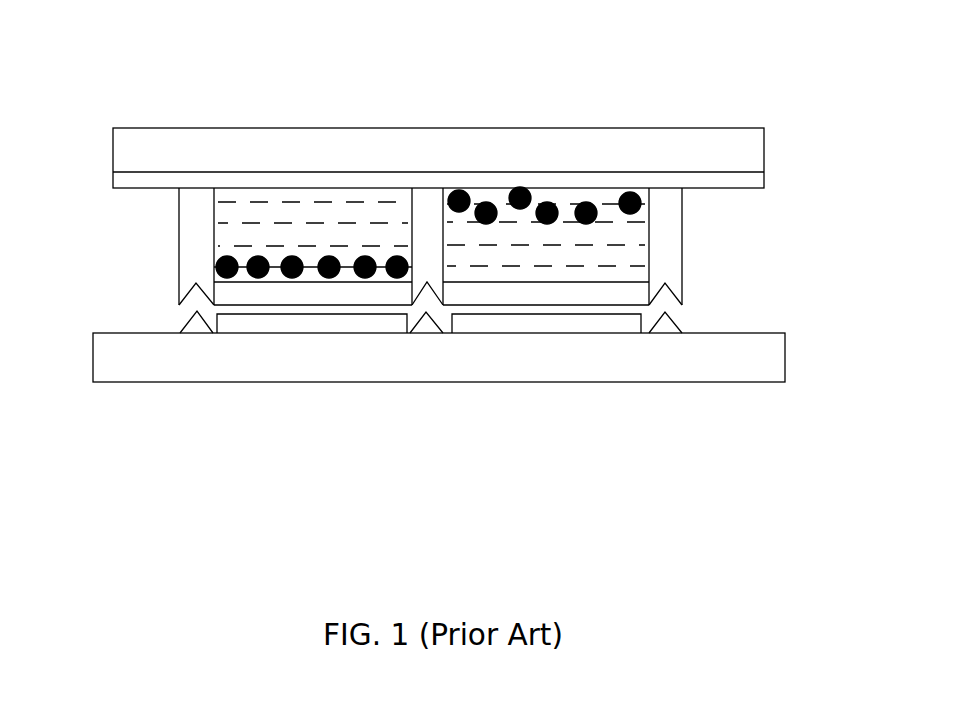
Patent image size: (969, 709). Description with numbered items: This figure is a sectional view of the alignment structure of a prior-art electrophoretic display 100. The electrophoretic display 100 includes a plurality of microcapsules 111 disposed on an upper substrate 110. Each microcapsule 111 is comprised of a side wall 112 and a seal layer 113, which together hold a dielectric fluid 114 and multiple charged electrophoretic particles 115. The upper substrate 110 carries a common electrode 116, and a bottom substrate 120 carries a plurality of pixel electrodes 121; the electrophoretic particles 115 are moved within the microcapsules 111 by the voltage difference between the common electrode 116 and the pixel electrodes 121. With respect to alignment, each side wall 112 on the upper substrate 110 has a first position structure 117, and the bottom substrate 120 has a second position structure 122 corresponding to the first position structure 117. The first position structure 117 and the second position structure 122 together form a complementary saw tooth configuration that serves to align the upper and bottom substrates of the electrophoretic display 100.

The electrophoretic display 100 is at (681, 98).
The upper substrate 110 is at (753, 153).
The microcapsules 111 is at (704, 232).
The side wall 112 is at (665, 272).
The seal layer 113 is at (618, 296).
The dielectric fluid 114 is at (228, 213).
The charged electrophoretic particles 115 is at (220, 261).
The common electrode 116 is at (121, 180).
The first position structure 117 is at (185, 300).
The bottom substrate 120 is at (328, 366).
The pixel electrodes 121 is at (246, 328).
The second position structure 122 is at (194, 317).